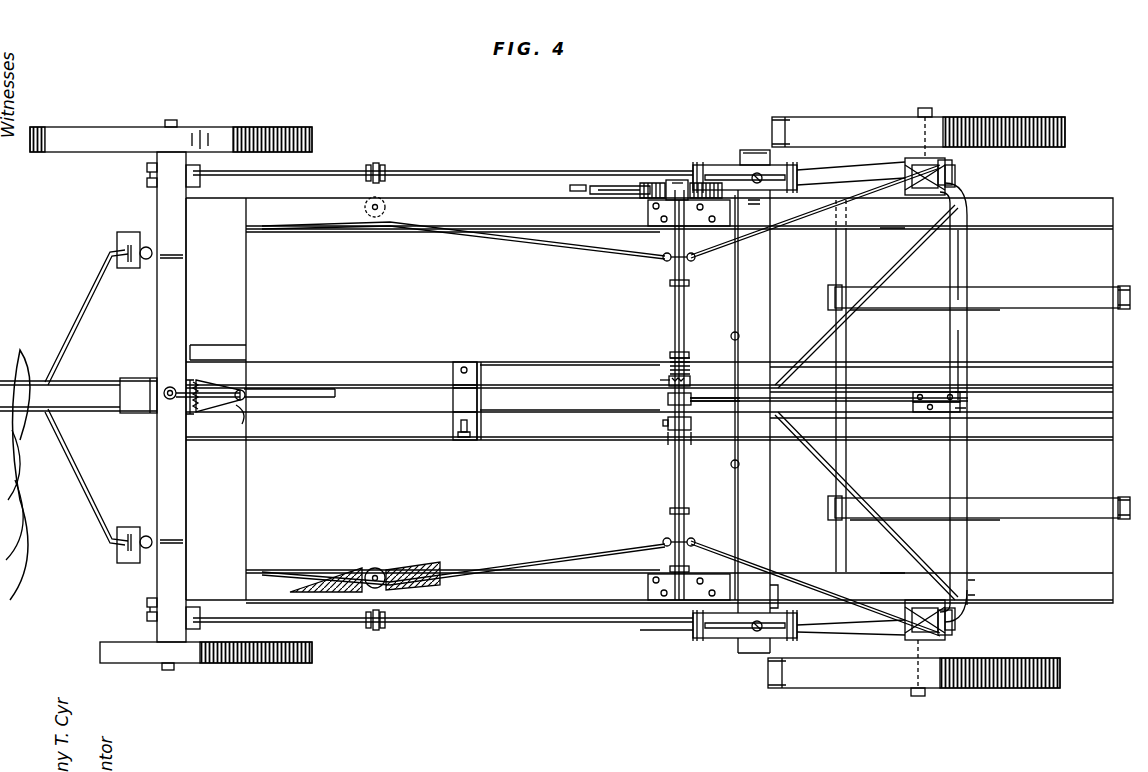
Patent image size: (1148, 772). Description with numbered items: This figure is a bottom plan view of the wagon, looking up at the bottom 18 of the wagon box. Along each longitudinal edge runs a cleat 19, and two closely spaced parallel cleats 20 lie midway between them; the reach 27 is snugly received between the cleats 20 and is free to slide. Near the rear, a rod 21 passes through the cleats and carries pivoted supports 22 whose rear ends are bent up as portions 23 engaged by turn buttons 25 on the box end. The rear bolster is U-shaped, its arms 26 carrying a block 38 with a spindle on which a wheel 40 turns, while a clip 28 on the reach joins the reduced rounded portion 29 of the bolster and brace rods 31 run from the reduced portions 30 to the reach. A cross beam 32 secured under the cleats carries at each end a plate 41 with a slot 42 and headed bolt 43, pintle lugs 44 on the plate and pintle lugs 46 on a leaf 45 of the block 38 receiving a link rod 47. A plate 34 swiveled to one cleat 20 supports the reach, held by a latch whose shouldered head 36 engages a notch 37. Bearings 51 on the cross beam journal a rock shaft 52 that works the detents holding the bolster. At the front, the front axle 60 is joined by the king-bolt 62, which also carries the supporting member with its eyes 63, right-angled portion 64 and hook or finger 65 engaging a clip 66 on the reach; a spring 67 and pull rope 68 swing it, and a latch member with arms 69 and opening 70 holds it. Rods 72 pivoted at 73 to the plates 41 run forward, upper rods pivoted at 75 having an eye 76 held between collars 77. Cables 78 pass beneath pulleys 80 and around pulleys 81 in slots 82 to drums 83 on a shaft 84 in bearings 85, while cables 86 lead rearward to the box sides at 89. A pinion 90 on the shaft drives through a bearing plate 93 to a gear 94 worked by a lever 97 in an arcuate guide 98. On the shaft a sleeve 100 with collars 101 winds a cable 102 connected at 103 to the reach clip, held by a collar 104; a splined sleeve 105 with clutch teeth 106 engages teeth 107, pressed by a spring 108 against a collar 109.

The bottom of the wagon box 18 is at (453, 401).
The cleat 19 is at (246, 212).
The cleat 20 is at (405, 418).
The rod 21 is at (836, 262).
The support 22 is at (1045, 308).
The upwardly bent rear end of support 23 is at (1128, 310).
The turn button 25 is at (1126, 286).
The arm of rear bolster 26 is at (890, 228).
The reach 27 is at (548, 405).
The clip 28 is at (926, 392).
The reduced rounded portion 29 is at (942, 420).
The reduced portion 30 is at (973, 590).
The brace rod 31 is at (833, 347).
The cross beam 32 is at (768, 525).
The plate 34 is at (455, 363).
The shouldered head 36 is at (470, 446).
The notch 37 is at (458, 428).
The block 38 is at (905, 160).
The wheel 40 is at (1040, 118).
The plate 41 is at (716, 165).
The slot 42 is at (750, 150).
The headed bolt 43 is at (757, 172).
The pintle lug 44 is at (696, 164).
The leaf 45 is at (920, 196).
The pintle lug 46 is at (955, 175).
The link rod 47 is at (838, 162).
The bearing 51 is at (738, 336).
The rock shaft 52 is at (738, 290).
The front axle 60 is at (182, 527).
The king-bolt 62 is at (170, 413).
The eye 63 is at (171, 386).
The right-angled portion 64 is at (210, 405).
The hook or finger 65 is at (234, 386).
The clip 66 is at (266, 388).
The spring 67 is at (199, 420).
The pull rope 68 is at (222, 345).
The arm of latch member 69 is at (236, 420).
The opening 70 is at (246, 386).
The rod 72 is at (497, 170).
The pivot 73 is at (665, 640).
The pivot 75 is at (203, 165).
The eye 76 is at (375, 165).
The collar 77 is at (386, 167).
The cable 78 is at (575, 246).
The pulley 80 is at (150, 188).
The pulley 81 is at (372, 218).
The slot 82 is at (410, 573).
The drum 83 is at (664, 262).
The shaft 84 is at (675, 481).
The bearing 85 is at (648, 210).
The cable 86 is at (800, 218).
The cable attachment 89 is at (770, 603).
The pinion 90 is at (671, 180).
The bearing plate 93 is at (668, 180).
The gear 94 is at (650, 183).
The lever 97 is at (576, 185).
The arcuate guide 98 is at (610, 186).
The sleeve 100 is at (668, 400).
The collar 101 is at (668, 432).
The cable 102 is at (852, 395).
The cable connection 103 is at (970, 400).
The collar 104 is at (691, 426).
The sleeve 105 is at (690, 379).
The clutch teeth 106 is at (670, 377).
The clutch teeth 107 is at (660, 382).
The spring 108 is at (692, 362).
The collar 109 is at (692, 356).